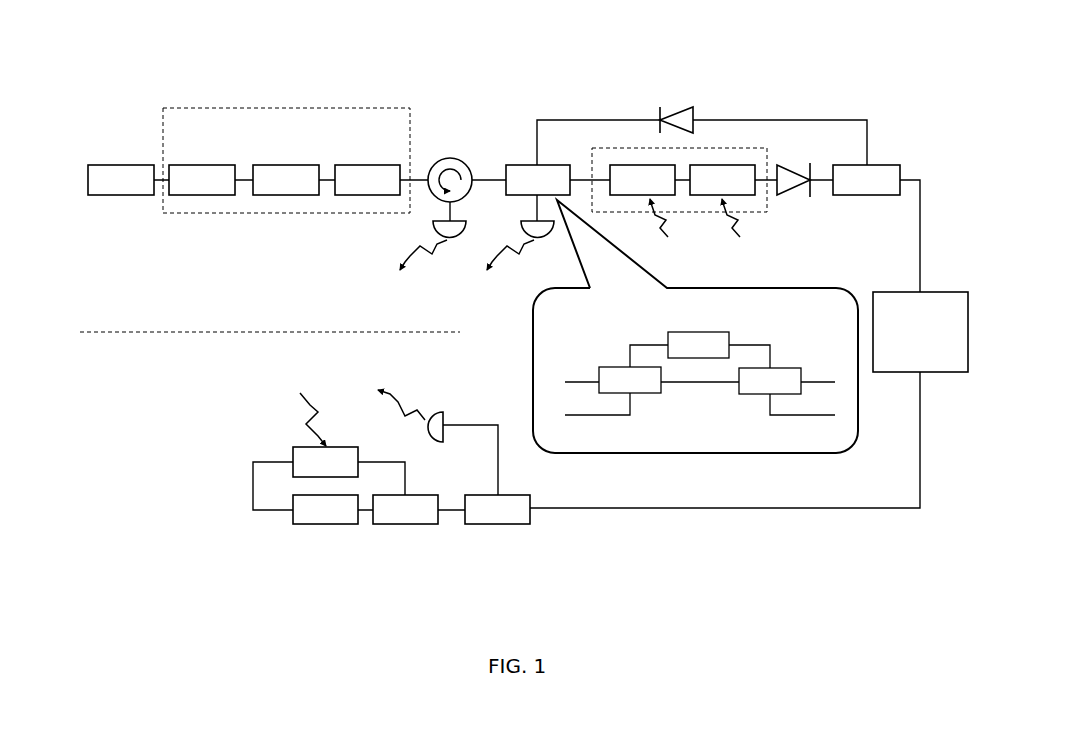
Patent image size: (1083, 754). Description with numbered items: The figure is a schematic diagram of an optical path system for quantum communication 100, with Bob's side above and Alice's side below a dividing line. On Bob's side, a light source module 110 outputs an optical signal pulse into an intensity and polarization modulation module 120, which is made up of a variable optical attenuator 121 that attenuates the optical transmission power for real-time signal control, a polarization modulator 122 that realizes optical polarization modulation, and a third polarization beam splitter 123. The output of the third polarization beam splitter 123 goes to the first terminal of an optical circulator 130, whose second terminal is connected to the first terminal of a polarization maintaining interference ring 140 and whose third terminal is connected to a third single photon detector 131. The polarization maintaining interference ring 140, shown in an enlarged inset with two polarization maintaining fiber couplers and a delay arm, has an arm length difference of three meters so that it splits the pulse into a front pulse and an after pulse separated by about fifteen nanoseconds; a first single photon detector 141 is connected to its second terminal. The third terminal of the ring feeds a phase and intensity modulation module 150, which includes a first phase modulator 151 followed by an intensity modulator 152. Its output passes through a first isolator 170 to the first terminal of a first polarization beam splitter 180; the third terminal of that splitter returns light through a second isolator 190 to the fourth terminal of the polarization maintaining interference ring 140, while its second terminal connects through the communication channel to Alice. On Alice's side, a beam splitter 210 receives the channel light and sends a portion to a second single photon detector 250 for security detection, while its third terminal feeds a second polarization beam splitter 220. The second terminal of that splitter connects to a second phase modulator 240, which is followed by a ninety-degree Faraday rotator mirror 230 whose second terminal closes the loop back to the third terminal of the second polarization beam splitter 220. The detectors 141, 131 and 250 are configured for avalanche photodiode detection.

The optical path system for quantum communication 100 is at (547, 30).
The light source module 110 is at (97, 165).
The intensity and polarization modulation module 120 is at (257, 108).
The variable optical attenuator 121 is at (187, 165).
The polarization modulator 122 is at (267, 165).
The third polarization beam splitter 123 is at (345, 165).
The optical circulator 130 is at (432, 165).
The third single photon detector 131 is at (455, 233).
The polarization maintaining interference ring 140 is at (552, 165).
The first single photon detector 141 is at (532, 230).
The phase and intensity modulation module 150 is at (742, 148).
The first phase modulator 151 is at (623, 197).
The intensity modulator 152 is at (700, 197).
The first isolator 170 is at (783, 195).
The first polarization beam splitter 180 is at (857, 195).
The second isolator 190 is at (692, 108).
The beam splitter 210 is at (512, 523).
The second polarization beam splitter 220 is at (395, 524).
The 90-degree Faraday rotator mirror 230 is at (302, 524).
The second phase modulator 240 is at (298, 447).
The second single photon detector 250 is at (433, 413).